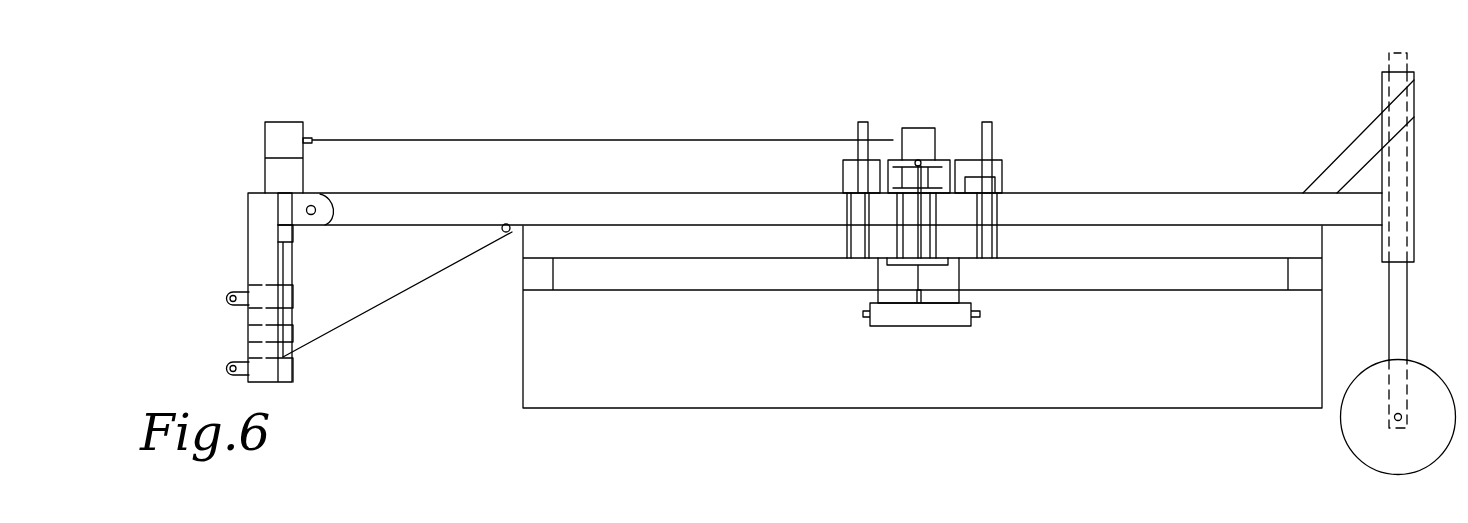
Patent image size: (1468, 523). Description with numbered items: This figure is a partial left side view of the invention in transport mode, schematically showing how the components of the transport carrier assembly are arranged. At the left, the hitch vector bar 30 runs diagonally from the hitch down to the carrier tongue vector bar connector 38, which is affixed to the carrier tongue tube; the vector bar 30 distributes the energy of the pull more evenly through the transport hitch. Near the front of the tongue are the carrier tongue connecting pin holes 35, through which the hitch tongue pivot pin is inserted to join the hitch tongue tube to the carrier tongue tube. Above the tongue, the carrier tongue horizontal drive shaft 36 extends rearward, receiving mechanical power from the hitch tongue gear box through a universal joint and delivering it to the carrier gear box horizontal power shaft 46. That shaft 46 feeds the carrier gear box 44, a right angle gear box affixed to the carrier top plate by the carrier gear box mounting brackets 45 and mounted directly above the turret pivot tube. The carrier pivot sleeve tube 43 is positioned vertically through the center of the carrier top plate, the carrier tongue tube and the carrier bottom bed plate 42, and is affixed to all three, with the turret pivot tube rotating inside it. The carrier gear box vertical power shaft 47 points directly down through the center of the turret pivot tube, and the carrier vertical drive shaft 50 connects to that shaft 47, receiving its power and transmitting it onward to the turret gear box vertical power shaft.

The hitch vector bar 30 is at (350, 322).
The carrier tongue connecting pin holes 35 is at (310, 215).
The carrier tongue horizontal drive shaft 36 is at (545, 139).
The carrier tongue vector bar connector 38 is at (506, 224).
The carrier bottom bed plate 42 is at (877, 226).
The carrier pivot sleeve tube 43 is at (937, 213).
The carrier gear box 44 is at (905, 128).
The carrier gear box mounting brackets 45 is at (890, 160).
The carrier gear box horizontal power shaft 46 is at (897, 137).
The carrier gear box vertical power shaft 47 is at (918, 160).
The carrier vertical drive shaft 50 is at (912, 275).